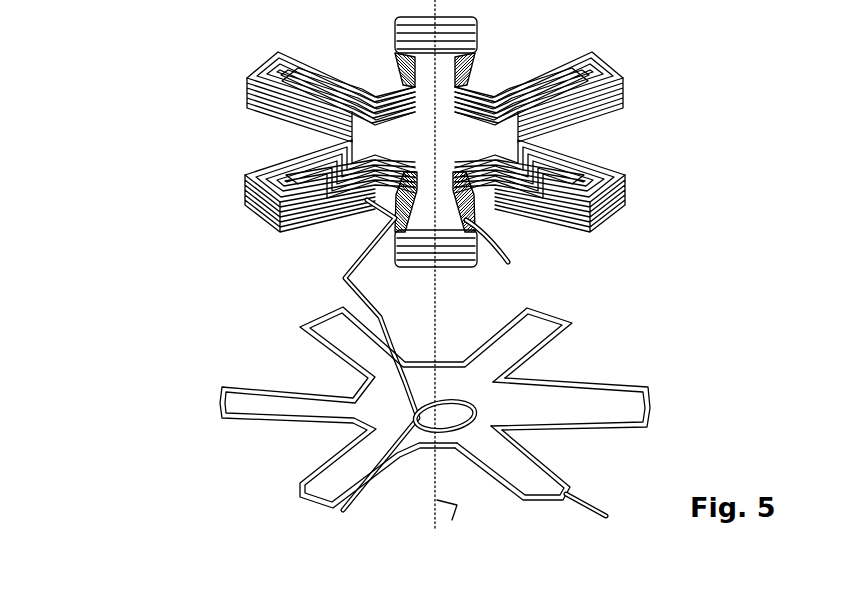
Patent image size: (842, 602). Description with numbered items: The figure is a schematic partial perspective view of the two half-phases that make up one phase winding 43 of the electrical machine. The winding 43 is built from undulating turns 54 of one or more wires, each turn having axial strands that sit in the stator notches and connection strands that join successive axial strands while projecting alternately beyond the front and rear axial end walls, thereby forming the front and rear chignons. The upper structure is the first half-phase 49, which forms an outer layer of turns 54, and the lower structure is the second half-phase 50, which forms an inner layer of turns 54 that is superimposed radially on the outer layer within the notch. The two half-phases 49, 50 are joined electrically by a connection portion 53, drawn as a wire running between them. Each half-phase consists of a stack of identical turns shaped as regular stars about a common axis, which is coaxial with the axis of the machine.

The winding 43 is at (427, 288).
The first half-phase 49 is at (465, 155).
The second half-phase 50 is at (472, 432).
The connection portion 53 is at (356, 355).
The turn 54 is at (543, 111).